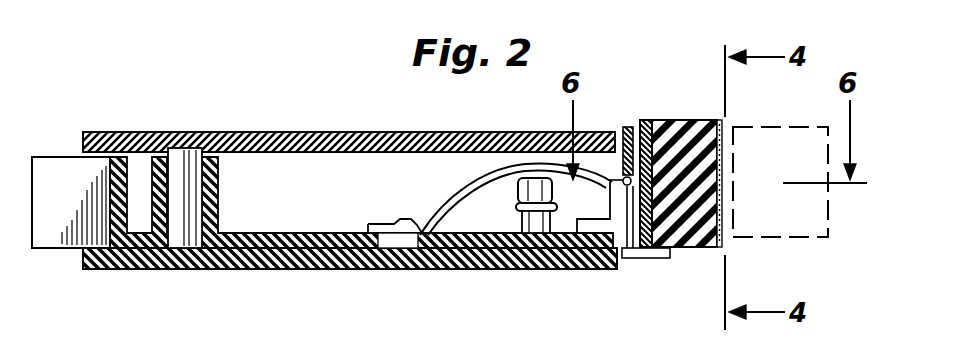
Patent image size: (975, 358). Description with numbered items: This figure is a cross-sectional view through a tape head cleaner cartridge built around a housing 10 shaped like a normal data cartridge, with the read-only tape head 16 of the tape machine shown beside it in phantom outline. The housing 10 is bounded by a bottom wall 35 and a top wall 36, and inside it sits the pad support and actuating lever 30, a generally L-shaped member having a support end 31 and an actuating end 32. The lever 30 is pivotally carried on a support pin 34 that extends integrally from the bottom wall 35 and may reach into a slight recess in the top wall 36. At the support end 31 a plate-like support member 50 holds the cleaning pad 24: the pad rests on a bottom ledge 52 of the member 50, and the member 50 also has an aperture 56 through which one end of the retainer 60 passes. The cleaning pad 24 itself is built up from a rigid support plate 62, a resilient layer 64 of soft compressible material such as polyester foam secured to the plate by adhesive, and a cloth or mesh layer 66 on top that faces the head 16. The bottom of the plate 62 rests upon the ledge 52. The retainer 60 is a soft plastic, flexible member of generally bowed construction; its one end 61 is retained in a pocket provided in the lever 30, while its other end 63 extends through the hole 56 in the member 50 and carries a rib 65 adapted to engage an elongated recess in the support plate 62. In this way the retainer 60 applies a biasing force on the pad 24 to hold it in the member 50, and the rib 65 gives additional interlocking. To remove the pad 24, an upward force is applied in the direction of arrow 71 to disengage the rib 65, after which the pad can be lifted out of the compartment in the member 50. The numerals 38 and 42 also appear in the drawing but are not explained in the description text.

The housing 10 is at (350, 183).
The read-only tape head 16 is at (830, 210).
The cleaning pad 24 is at (706, 124).
The pad support and actuating lever 30 is at (324, 222).
The support end 31 is at (591, 262).
The actuating end 32 is at (55, 158).
The support pin 34 is at (186, 158).
The bottom wall 35 is at (263, 269).
The top wall 36 is at (457, 131).
The bottom surface 38 is at (479, 270).
The rivet 42 is at (519, 188).
The plate like support member 50 is at (620, 112).
The bottom ledge 52 is at (660, 262).
The aperture 56 is at (633, 264).
The retainer 60 is at (525, 152).
The one end of retainer 61 is at (405, 223).
The rigid support plate 62 is at (641, 127).
The other end of retainer 63 is at (613, 178).
The resilient layer 64 is at (668, 120).
The rib 65 is at (668, 180).
The cloth or mesh layer 66 is at (722, 118).
The arrow 71 is at (693, 264).